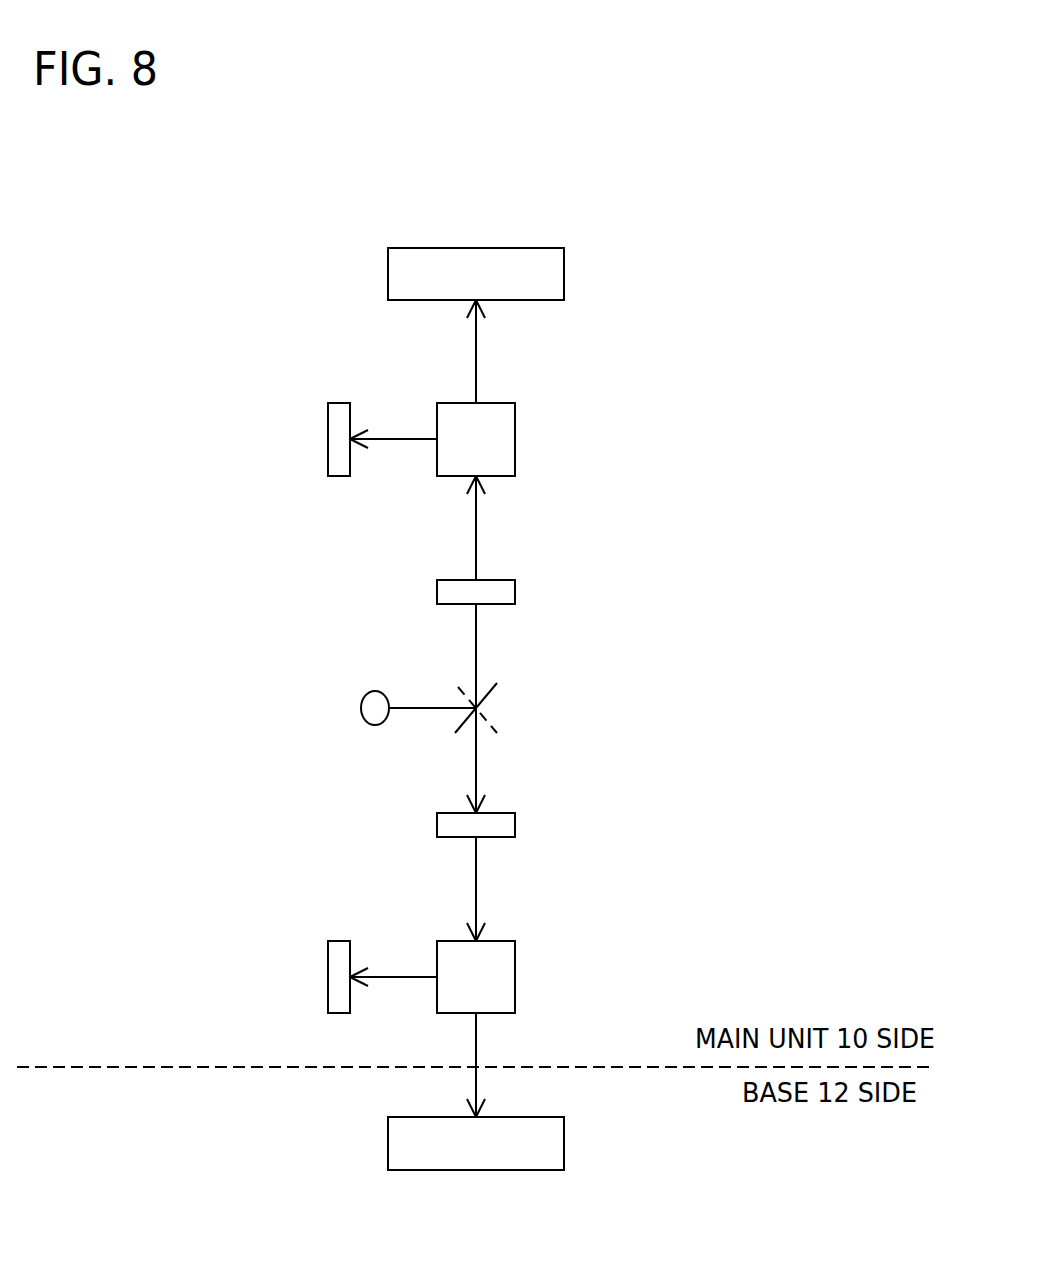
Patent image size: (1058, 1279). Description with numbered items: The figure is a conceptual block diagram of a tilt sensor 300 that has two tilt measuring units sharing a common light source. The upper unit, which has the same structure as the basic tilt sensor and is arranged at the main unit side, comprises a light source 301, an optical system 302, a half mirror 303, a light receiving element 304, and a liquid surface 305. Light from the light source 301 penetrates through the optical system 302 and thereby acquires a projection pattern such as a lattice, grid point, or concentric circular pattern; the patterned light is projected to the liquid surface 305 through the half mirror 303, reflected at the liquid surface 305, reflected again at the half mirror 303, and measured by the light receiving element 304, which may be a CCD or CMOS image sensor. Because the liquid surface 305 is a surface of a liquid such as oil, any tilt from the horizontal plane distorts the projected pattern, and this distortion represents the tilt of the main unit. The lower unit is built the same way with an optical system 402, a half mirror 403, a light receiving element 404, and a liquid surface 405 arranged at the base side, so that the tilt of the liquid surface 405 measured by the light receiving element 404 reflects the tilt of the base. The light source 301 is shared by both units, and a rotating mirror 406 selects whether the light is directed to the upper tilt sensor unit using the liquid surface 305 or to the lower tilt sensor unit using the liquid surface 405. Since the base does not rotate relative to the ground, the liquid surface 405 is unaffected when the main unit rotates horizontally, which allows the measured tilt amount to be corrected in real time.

The tilt sensor 300 is at (593, 200).
The light source 301 is at (361, 708).
The optical system 302 is at (515, 591).
The half mirror 303 is at (515, 437).
The light receiving element 304 is at (328, 443).
The liquid surface 305 is at (564, 272).
The optical system 402 is at (515, 822).
The half mirror 403 is at (515, 977).
The light receiving element 404 is at (328, 979).
The liquid surface 405 is at (564, 1145).
The rotating mirror 406 is at (484, 700).